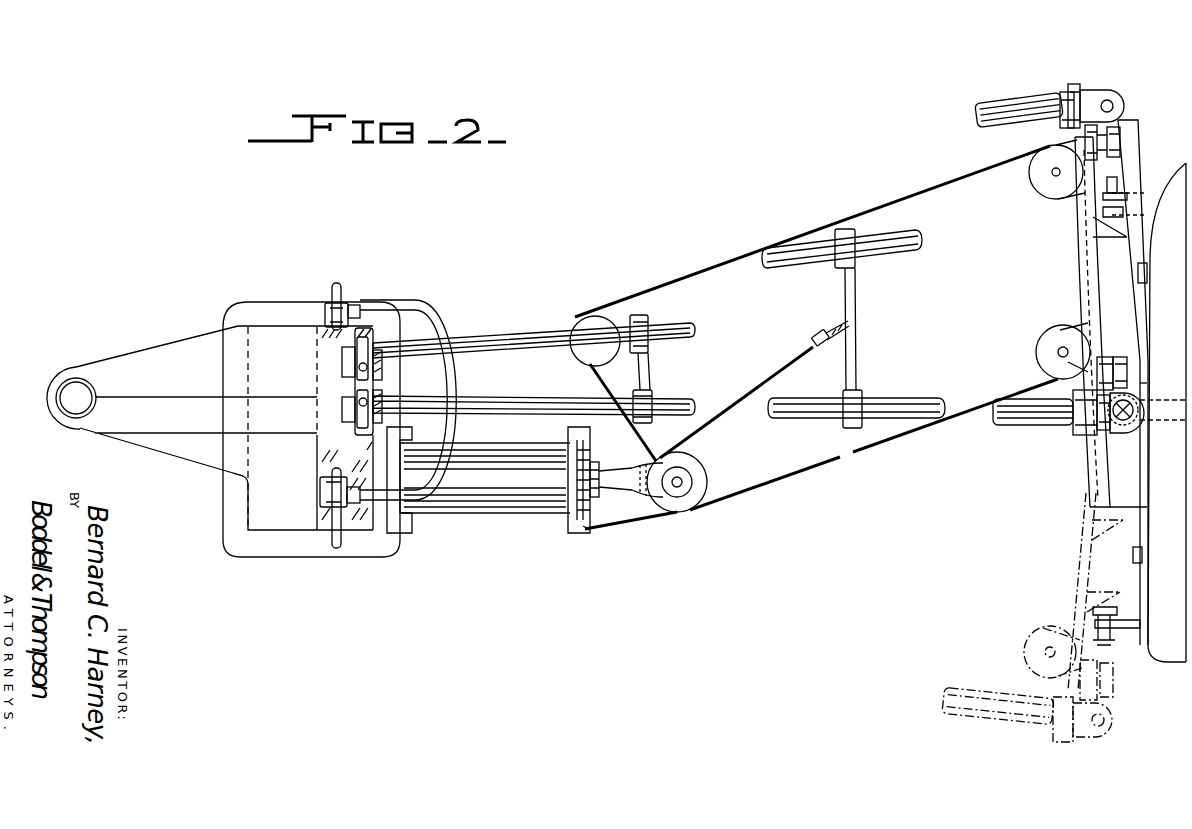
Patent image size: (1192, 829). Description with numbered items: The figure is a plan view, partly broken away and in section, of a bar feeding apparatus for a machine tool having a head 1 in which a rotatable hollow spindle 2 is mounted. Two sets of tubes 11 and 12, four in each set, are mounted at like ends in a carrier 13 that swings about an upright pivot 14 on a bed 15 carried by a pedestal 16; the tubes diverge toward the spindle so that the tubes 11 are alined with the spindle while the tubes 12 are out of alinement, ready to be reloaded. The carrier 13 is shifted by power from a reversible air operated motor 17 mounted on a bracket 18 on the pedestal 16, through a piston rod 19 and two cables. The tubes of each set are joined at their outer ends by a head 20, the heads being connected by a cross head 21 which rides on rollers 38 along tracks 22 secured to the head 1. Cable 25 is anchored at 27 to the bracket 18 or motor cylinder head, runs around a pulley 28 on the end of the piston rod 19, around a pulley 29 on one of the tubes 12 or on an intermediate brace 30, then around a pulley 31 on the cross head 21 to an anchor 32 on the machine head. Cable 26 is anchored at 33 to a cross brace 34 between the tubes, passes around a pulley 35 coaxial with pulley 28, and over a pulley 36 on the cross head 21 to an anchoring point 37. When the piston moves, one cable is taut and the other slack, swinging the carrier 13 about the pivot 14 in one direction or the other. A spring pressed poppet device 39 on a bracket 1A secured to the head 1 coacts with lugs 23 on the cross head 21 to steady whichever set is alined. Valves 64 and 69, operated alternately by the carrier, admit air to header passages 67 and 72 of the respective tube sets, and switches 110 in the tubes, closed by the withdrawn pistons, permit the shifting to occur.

The head 1 is at (1173, 657).
The bracket 1A is at (1147, 383).
The hollow spindle 2 is at (1143, 400).
The tubes 11 is at (493, 399).
The tubes 12 is at (512, 341).
The carrier 13 is at (224, 428).
The upright pivot 14 is at (93, 392).
The bed 15 is at (185, 459).
The pedestal 16 is at (286, 553).
The reversible air operated motor 17 is at (465, 507).
The bracket 18 is at (520, 527).
The piston rod 19 is at (608, 472).
The head 20 is at (1088, 437).
The cross head 21 is at (1080, 283).
The tracks 22 is at (1130, 170).
The lugs 23 is at (1107, 435).
The cable 25 is at (578, 378).
The cable 26 is at (800, 477).
The anchor 27 is at (585, 527).
The pulley 28 is at (687, 500).
The pulley 29 is at (587, 317).
The intermediate brace 30 is at (649, 372).
The pulley 31 is at (1048, 192).
The anchor 32 is at (1133, 556).
The anchor 33 is at (828, 330).
The cross brace 34 is at (856, 318).
The pulley 35 is at (700, 473).
The pulley 36 is at (1038, 353).
The anchoring point 37 is at (1147, 273).
The rollers 38 is at (1120, 137).
The spring pressed poppet device 39 is at (1133, 430).
The valve 64 is at (325, 315).
The header passage 67 is at (363, 432).
The valve 69 is at (320, 485).
The header passage 72 is at (373, 350).
The switches 110 is at (342, 398).